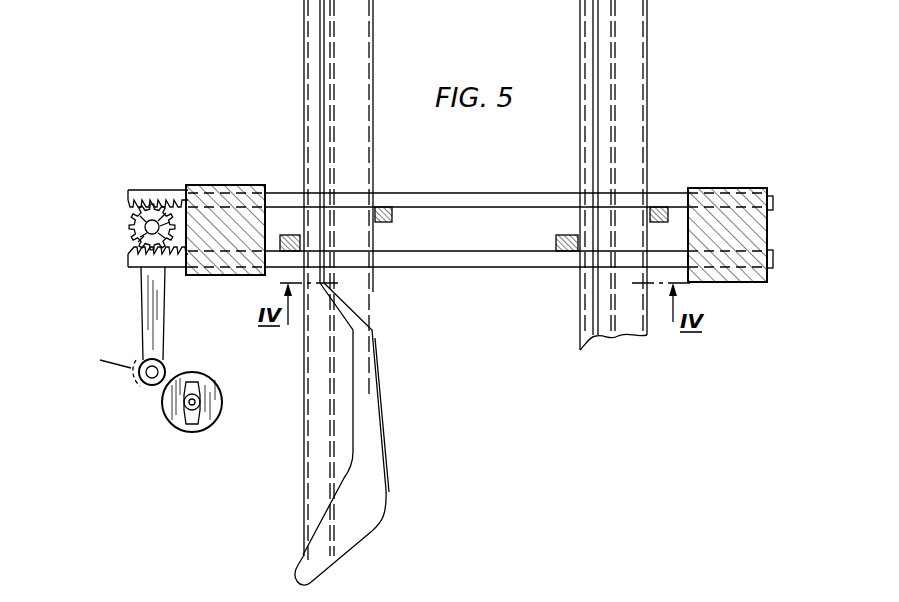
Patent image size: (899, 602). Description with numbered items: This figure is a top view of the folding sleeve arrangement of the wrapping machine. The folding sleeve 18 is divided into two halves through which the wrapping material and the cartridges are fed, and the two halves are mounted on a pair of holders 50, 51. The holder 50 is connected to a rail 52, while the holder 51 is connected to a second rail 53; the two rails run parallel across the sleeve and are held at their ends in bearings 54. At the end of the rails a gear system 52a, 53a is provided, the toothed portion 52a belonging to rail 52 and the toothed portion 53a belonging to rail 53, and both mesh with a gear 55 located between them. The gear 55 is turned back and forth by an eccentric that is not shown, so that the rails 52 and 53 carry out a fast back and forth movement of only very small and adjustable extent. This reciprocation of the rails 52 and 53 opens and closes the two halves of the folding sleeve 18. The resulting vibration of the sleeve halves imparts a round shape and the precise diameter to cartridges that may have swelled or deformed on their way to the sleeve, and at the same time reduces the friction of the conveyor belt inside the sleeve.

The folding sleeve 18 is at (380, 60).
The holder 50 is at (288, 235).
The holder 51 is at (392, 207).
The rail 52 is at (478, 267).
The gear system 52a is at (172, 266).
The rail 53 is at (508, 193).
The gear system 53a is at (172, 206).
The bearing 54 is at (222, 275).
The gear 55 is at (165, 212).